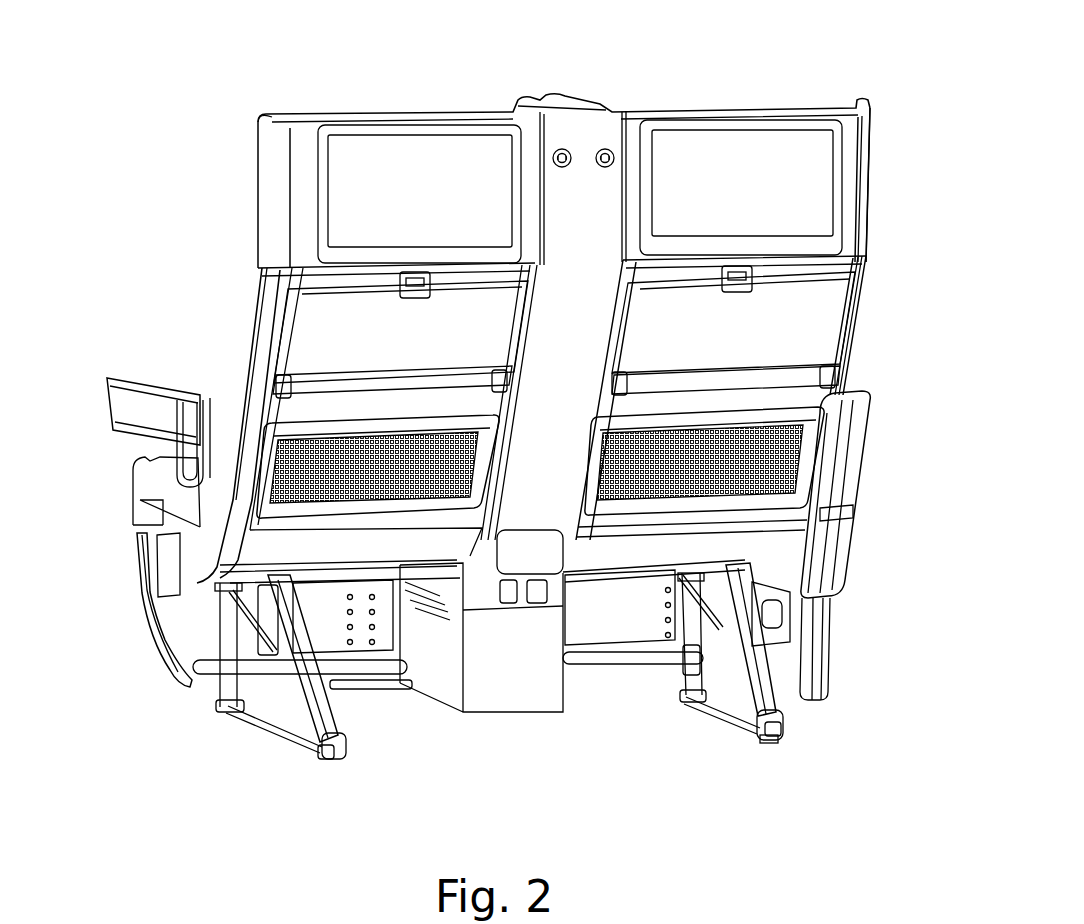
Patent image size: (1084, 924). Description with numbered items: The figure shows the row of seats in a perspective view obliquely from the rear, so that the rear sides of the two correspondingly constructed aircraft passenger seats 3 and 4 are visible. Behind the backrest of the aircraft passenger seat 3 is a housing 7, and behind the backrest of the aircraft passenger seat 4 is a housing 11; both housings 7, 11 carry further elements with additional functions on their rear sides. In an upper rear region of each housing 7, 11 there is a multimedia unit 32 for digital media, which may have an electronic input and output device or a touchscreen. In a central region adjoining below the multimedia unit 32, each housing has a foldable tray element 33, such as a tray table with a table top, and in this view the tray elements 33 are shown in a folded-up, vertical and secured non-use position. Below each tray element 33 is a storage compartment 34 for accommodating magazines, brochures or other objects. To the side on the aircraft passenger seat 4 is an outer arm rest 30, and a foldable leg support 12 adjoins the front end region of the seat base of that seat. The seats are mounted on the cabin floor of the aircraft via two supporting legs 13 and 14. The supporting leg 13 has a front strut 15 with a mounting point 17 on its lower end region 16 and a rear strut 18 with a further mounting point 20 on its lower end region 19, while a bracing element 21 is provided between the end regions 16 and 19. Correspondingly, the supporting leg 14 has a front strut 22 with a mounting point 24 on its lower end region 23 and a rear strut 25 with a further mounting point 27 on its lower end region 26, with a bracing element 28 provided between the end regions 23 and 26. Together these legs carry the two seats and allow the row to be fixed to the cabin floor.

The aircraft passenger seat 3 is at (770, 82).
The aircraft passenger seat 4 is at (414, 96).
The housing 7 is at (872, 160).
The housing 11 is at (258, 115).
The leg support 12 is at (148, 600).
The supporting leg 13 is at (793, 724).
The supporting leg 14 is at (346, 717).
The front strut 15 is at (668, 684).
The lower end region 16 is at (670, 702).
The mounting point 17 is at (680, 697).
The rear strut 18 is at (757, 677).
The lower end region 19 is at (788, 741).
The mounting point 20 is at (778, 735).
The bracing element 21 is at (720, 715).
The front strut 22 is at (226, 702).
The lower end region 23 is at (208, 712).
The mounting point 24 is at (218, 706).
The rear strut 25 is at (325, 690).
The lower end region 26 is at (344, 756).
The mounting point 27 is at (332, 750).
The bracing element 28 is at (261, 725).
The outer arm rest 30 is at (118, 372).
The multimedia unit 32 is at (404, 196).
The tray element 33 is at (312, 332).
The storage compartment 34 is at (323, 457).